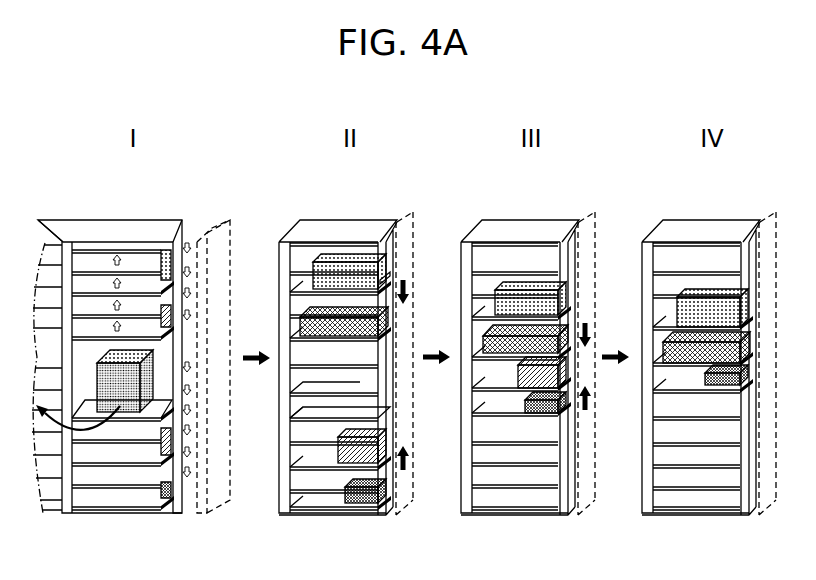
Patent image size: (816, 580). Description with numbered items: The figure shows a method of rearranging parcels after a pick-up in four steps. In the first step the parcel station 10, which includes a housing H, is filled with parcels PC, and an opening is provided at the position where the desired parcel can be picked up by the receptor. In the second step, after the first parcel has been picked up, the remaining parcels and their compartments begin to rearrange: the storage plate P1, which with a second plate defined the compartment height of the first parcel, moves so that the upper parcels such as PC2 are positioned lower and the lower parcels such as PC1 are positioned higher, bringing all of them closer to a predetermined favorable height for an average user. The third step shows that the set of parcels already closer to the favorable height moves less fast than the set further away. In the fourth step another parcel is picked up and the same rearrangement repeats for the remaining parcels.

The parcel station 10 is at (148, 228).
The parcels PC is at (146, 379).
The housing H is at (388, 284).
The second product carrier PC2 is at (350, 316).
The storage plate P1 is at (358, 407).
The first product carrier PC1 is at (360, 452).